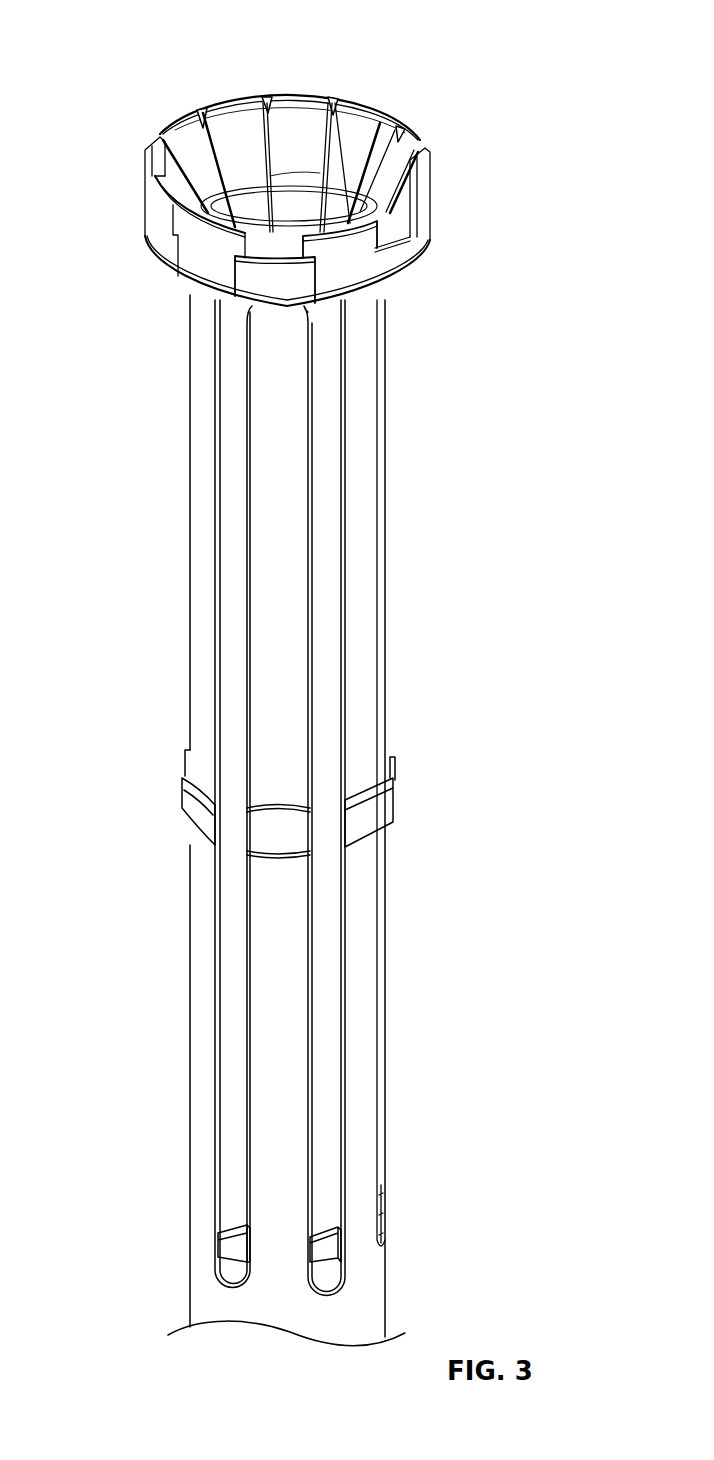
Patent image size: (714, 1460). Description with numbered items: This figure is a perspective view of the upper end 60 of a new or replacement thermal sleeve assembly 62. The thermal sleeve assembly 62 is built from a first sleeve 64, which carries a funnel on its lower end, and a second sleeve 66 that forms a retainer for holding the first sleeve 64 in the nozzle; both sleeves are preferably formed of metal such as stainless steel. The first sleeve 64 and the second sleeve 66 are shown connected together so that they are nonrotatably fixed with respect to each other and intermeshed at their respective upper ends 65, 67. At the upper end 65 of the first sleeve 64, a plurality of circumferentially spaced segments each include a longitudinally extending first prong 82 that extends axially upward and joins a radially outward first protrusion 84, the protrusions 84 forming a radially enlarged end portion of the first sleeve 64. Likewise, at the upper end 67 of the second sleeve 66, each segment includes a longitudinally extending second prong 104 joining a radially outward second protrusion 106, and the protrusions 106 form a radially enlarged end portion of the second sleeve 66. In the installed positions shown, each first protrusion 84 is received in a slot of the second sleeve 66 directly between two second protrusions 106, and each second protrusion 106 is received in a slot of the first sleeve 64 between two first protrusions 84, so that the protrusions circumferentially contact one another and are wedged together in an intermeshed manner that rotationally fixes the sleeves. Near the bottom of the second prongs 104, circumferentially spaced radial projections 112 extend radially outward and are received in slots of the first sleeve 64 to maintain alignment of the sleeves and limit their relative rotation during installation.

The upper end 60 is at (431, 125).
The thermal sleeve assembly 62 is at (152, 40).
The first sleeve 64 is at (200, 550).
The upper end of first sleeve 65 is at (298, 85).
The second sleeve 66 is at (234, 460).
The upper end of second sleeve 67 is at (382, 94).
The first prong 82 is at (199, 618).
The first protrusion 84 is at (165, 245).
The second prong 104 is at (228, 400).
The second protrusion 106 is at (203, 267).
The radial projection 112 is at (223, 1243).